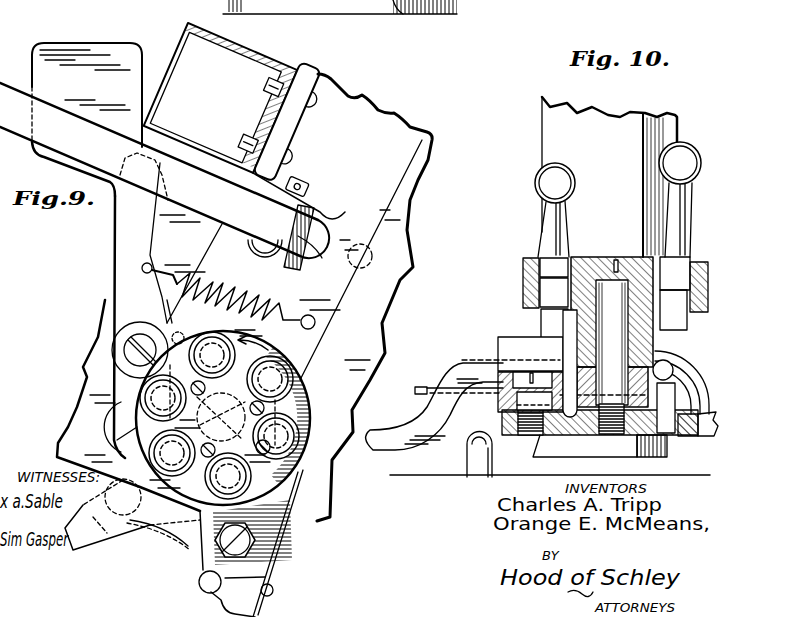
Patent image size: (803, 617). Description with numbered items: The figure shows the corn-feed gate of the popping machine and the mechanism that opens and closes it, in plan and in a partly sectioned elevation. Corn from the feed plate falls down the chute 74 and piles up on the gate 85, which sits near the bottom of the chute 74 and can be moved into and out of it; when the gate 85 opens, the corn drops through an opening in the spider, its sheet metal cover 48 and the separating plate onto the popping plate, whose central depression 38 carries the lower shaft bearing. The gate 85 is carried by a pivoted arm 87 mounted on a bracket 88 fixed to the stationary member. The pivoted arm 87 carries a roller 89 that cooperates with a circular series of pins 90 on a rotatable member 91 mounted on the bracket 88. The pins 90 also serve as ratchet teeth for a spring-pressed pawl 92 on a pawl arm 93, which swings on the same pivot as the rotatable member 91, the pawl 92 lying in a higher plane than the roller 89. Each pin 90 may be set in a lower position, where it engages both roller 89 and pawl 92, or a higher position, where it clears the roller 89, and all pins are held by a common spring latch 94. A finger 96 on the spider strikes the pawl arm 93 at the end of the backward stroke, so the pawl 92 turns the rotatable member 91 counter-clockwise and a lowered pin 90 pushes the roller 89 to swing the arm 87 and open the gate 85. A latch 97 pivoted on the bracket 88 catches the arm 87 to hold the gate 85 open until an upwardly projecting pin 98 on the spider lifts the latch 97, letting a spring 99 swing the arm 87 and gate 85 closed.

In FIG. 9, the central depression 38 is at (340, 20).
In FIG. 9, the sheet metal cover 48 is at (405, 240).
In FIG. 10, the sheet metal cover 48 is at (425, 476).
In FIG. 9, the chute 74 is at (272, 62).
In FIG. 10, the chute 74 is at (643, 112).
In FIG. 9, the gate 85 is at (77, 26).
In FIG. 10, the gate 85 is at (416, 390).
In FIG. 9, the pivoted arm 87 is at (127, 265).
In FIG. 10, the pivoted arm 87 is at (501, 401).
In FIG. 9, the bracket 88 is at (431, 147).
In FIG. 10, the bracket 88 is at (687, 437).
In FIG. 9, the roller 89 is at (120, 342).
In FIG. 10, the roller 89 is at (497, 350).
In FIG. 10, the pins 90 is at (545, 290).
In FIG. 9, the rotatable member 91 is at (312, 388).
In FIG. 10, the rotatable member 91 is at (524, 268).
In FIG. 9, the spring-pressed pawl 92 is at (283, 538).
In FIG. 9, the pawl arm 93 is at (257, 588).
In FIG. 10, the pawl arm 93 is at (580, 440).
In FIG. 9, the spring latch 94 is at (181, 340).
In FIG. 10, the spring latch 94 is at (603, 256).
In FIG. 9, the finger 96 is at (199, 585).
In FIG. 9, the latch 97 is at (22, 133).
In FIG. 10, the latch 97 is at (452, 374).
In FIG. 9, the upwardly projecting pin 98 is at (370, 258).
In FIG. 10, the upwardly projecting pin 98 is at (477, 465).
In FIG. 9, the spring 99 is at (262, 302).